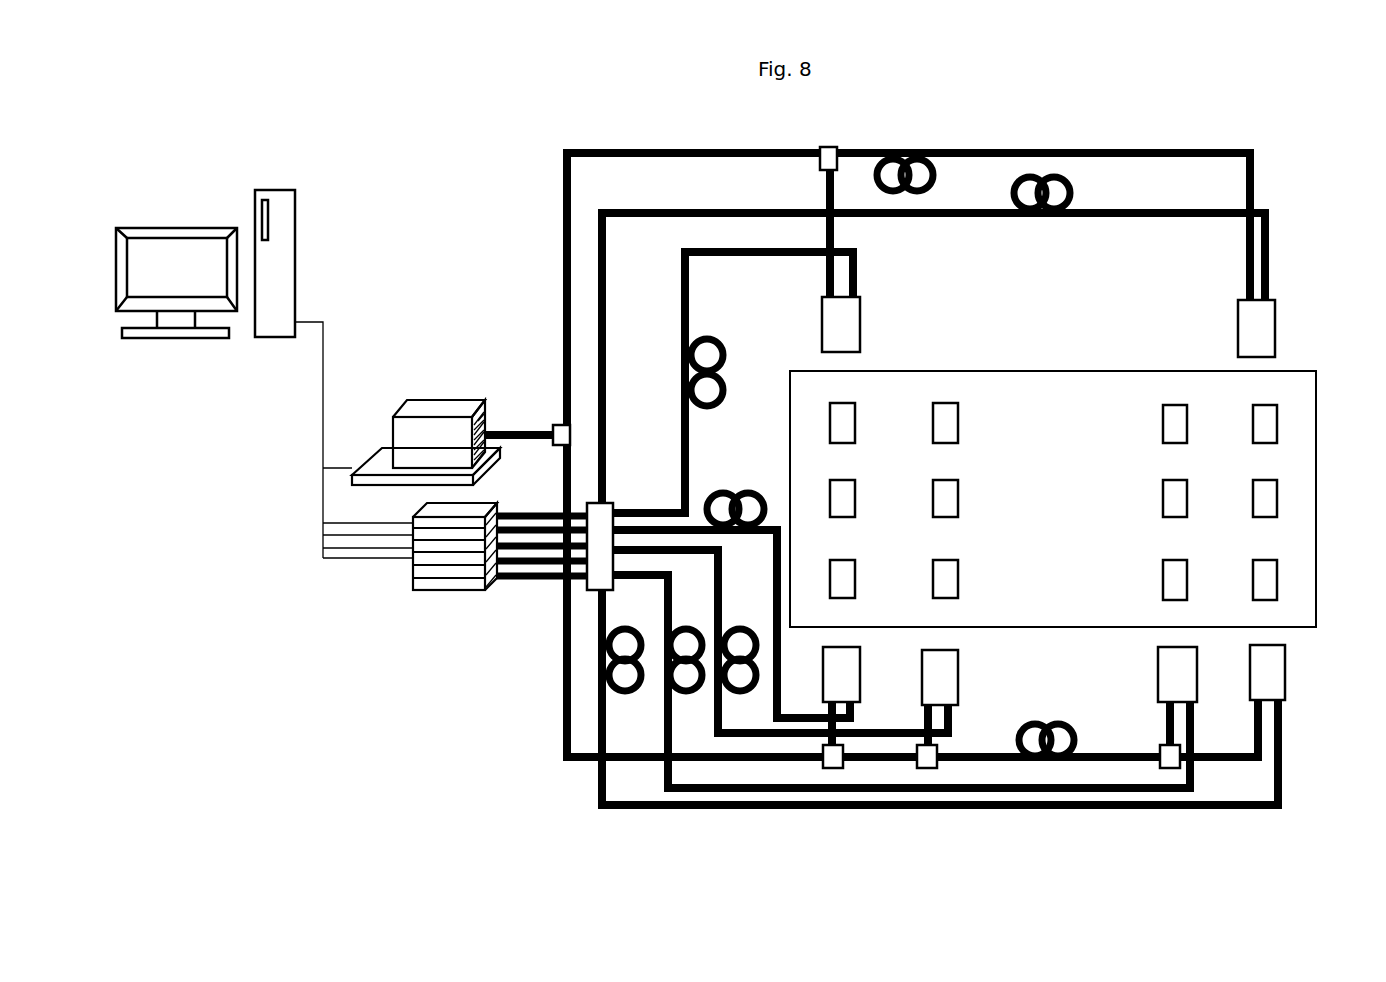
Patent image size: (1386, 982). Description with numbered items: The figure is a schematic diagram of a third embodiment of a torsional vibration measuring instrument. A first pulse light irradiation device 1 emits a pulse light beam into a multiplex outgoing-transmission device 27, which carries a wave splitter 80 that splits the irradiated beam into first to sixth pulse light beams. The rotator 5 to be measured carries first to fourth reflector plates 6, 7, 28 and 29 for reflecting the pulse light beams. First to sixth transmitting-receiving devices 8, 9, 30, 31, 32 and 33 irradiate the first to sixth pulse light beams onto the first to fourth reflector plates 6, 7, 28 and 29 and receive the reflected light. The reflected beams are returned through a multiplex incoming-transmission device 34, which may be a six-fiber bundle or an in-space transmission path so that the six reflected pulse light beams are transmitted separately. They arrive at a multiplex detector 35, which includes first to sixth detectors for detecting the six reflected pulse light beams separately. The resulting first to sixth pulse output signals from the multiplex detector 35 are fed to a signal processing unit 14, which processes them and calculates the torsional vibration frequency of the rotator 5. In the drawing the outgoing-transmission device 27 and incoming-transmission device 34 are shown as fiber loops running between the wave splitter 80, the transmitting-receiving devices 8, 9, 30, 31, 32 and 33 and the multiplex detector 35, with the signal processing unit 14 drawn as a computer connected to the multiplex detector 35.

The first pulse light irradiation device 1 is at (475, 452).
The rotator 5 is at (1294, 617).
The first reflector plate 6 is at (830, 565).
The second reflector plate 7 is at (1270, 573).
The first transmitting-receiving device 8 is at (862, 320).
The second transmitting-receiving device 9 is at (1238, 325).
The signal processing unit 14 is at (335, 174).
The multiplex outgoing-transmission device 27 is at (564, 302).
The third reflector plate 28 is at (958, 575).
The fourth reflector plate 29 is at (1163, 573).
The third transmitting-receiving device 30 is at (860, 680).
The fourth transmitting-receiving device 31 is at (1288, 688).
The fifth transmitting-receiving device 32 is at (958, 682).
The sixth transmitting-receiving device 33 is at (1198, 688).
The multiplex incoming-transmission device 34 is at (682, 312).
The multiplex detector 35 is at (476, 584).
The wave splitter 80 is at (555, 420).